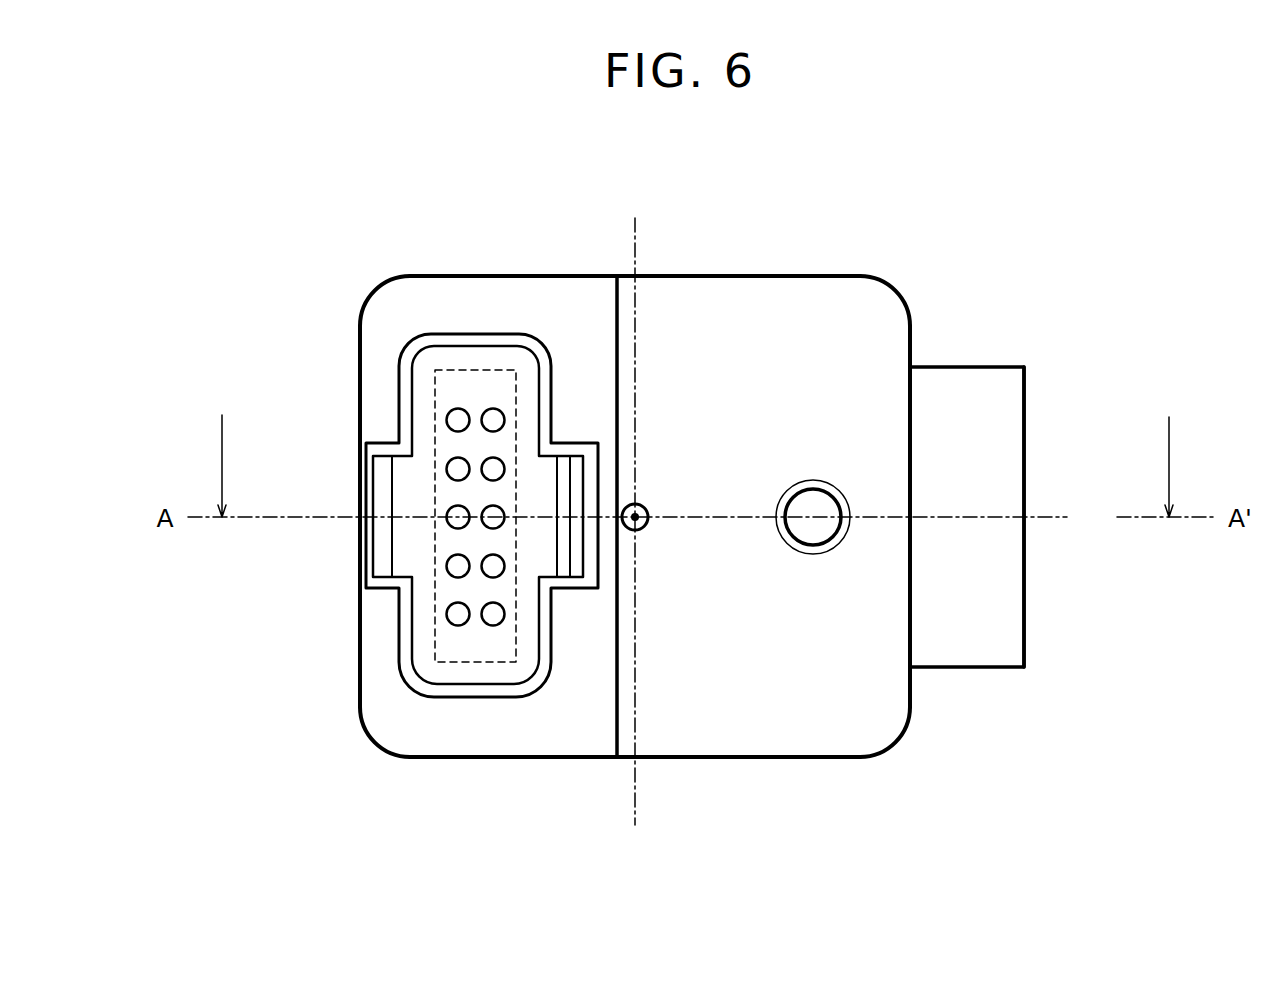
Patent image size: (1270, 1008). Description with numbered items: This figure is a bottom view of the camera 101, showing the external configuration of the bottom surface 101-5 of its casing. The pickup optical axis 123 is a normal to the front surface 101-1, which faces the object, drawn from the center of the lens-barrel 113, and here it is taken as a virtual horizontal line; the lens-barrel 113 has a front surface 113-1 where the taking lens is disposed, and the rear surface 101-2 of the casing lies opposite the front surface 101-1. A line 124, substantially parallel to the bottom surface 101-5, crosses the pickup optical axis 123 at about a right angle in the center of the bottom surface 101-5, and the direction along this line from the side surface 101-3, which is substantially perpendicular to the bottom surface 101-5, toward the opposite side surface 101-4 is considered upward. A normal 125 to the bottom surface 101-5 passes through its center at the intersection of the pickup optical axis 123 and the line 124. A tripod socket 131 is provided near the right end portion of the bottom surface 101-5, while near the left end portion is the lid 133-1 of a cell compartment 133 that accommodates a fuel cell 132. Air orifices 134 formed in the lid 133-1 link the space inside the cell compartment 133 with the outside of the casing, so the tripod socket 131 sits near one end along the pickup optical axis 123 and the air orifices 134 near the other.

The camera 101 is at (878, 793).
The front surface 101-1 is at (909, 347).
The rear surface 101-2 is at (358, 393).
The side surface 101-3 is at (772, 758).
The side surface 101-4 is at (828, 276).
The bottom surface 101-5 is at (705, 323).
The lens-barrel 113 is at (1010, 420).
The front surface of lens-barrel 113-1 is at (1024, 622).
The pickup optical axis 123 is at (701, 517).
The line 124 is at (637, 507).
The normal 125 is at (622, 505).
The tripod socket 131 is at (837, 542).
The fuel cell 132 is at (487, 662).
The cell compartment 133 is at (405, 635).
The lid 133-1 is at (530, 637).
The air orifices 134 is at (458, 626).